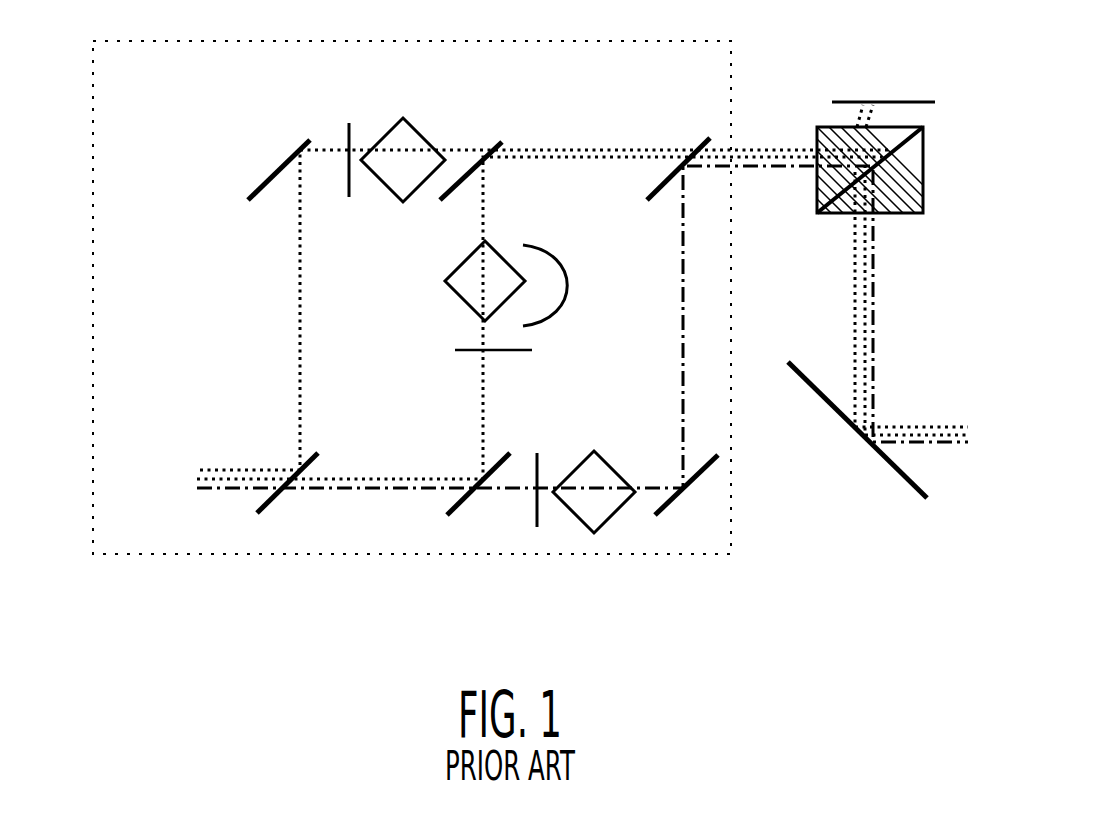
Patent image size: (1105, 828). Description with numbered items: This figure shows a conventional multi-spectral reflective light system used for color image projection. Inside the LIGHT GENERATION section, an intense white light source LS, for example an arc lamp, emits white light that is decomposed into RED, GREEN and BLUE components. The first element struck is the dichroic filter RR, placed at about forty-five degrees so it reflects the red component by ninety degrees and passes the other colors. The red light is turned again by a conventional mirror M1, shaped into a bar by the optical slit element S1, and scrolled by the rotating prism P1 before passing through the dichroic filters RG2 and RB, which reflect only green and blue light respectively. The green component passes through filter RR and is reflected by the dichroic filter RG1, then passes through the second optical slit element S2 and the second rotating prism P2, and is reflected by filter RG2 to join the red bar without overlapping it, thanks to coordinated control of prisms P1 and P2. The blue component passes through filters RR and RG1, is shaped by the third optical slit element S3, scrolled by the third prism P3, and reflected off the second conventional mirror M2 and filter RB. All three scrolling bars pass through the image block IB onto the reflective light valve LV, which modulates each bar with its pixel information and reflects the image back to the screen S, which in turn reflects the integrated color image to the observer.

The light generation section LIGHT GENERATION is at (495, 41).
The light source LS is at (145, 513).
The red light beam RED is at (265, 470).
The green light beam GREEN is at (446, 477).
The blue light beam BLUE is at (681, 395).
The conventional mirror M1 is at (268, 183).
The second conventional mirror M2 is at (693, 483).
The dichroic filter RR is at (273, 497).
The dichroic filter RG1 is at (480, 497).
The dichroic filter RG2 is at (470, 187).
The dichroic filter RB is at (670, 170).
The optical slit element S1 is at (347, 147).
The second optical slit element S2 is at (473, 351).
The third optical slit element S3 is at (543, 473).
The rotating prism P1 is at (382, 185).
The second rotating prism P2 is at (467, 307).
The third prism P3 is at (615, 517).
The light valve LV is at (903, 102).
The image block IB is at (910, 213).
The screen S is at (877, 455).